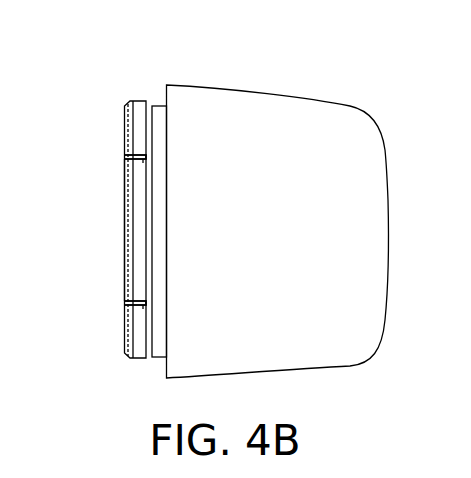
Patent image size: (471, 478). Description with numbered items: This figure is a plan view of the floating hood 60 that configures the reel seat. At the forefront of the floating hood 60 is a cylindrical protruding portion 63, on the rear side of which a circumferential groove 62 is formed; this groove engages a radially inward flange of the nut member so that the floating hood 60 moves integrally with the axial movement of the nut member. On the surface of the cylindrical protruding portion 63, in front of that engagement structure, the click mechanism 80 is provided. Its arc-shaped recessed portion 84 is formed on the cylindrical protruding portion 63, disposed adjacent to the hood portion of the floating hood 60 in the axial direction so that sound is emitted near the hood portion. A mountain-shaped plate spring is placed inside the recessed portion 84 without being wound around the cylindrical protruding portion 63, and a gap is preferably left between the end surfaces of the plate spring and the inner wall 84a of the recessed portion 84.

The floating hood 60 is at (349, 92).
The circumferential groove 62 is at (160, 141).
The cylindrical protruding portion 63 is at (143, 108).
The click mechanism 80 is at (109, 231).
The arc-shaped recessed portion 84 is at (127, 257).
The inner wall of the recessed portion 84a is at (133, 160).